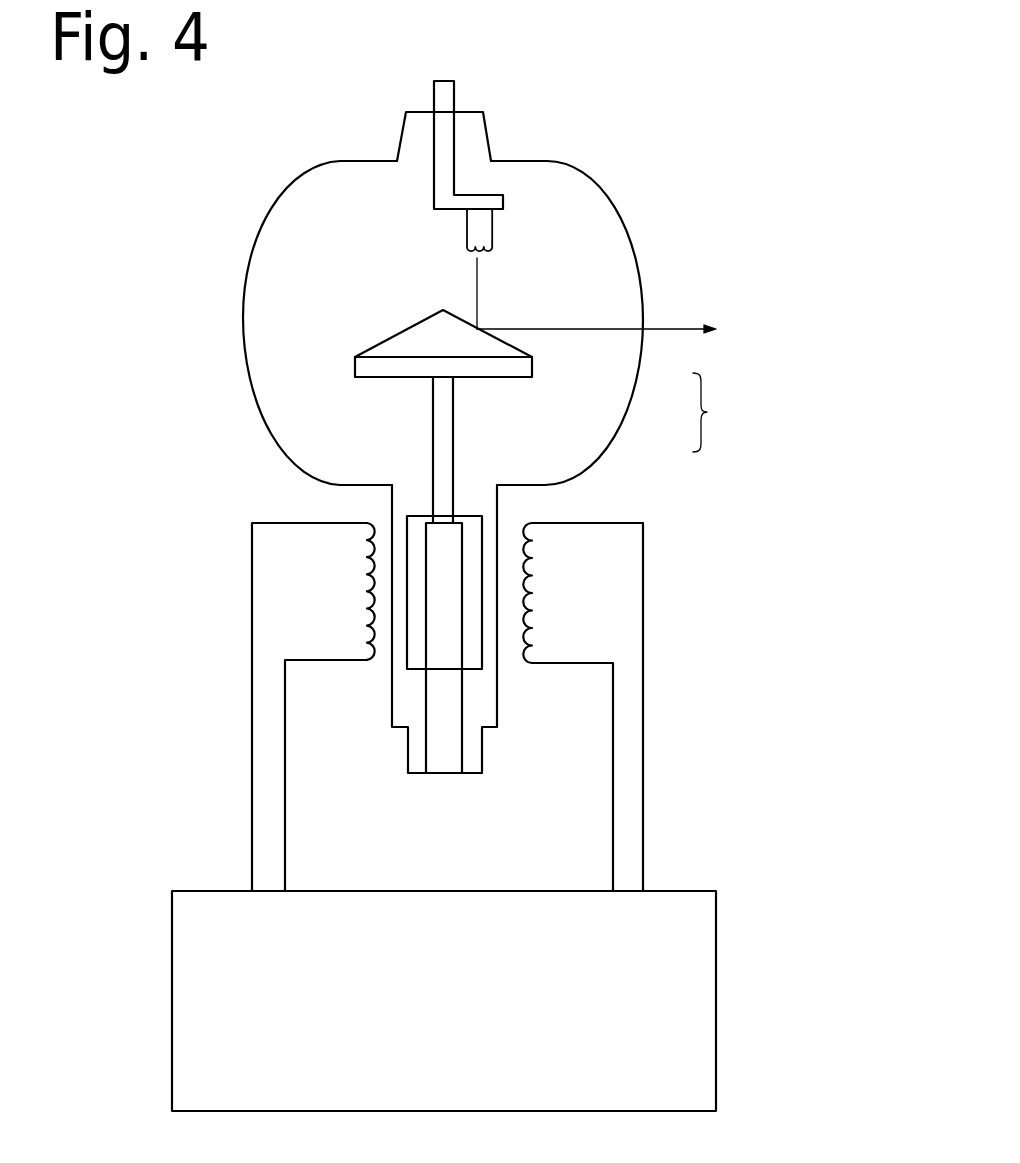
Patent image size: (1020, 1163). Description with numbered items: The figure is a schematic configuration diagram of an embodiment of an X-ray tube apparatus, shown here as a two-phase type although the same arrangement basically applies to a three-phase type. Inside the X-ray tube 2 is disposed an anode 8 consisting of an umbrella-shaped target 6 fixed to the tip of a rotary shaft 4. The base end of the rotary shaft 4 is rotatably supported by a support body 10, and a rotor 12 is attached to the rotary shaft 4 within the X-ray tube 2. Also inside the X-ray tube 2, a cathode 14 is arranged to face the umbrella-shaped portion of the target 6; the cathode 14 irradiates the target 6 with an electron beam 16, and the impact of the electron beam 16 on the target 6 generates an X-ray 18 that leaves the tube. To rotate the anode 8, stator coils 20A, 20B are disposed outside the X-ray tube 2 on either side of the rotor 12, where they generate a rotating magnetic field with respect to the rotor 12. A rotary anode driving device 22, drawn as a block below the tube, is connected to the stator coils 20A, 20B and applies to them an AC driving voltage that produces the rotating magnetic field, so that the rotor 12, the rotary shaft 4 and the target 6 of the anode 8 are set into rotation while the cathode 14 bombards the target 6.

The X-ray tube 2 is at (627, 222).
The rotary shaft 4 is at (455, 429).
The umbrella-shaped target 6 is at (505, 351).
The anode 8 is at (712, 412).
The support body 10 is at (447, 681).
The rotor 12 is at (482, 592).
The cathode 14 is at (482, 240).
The electron beam 16 is at (477, 295).
The X-ray 18 is at (572, 327).
The stator coil 20A is at (530, 627).
The stator coil 20B is at (362, 624).
The rotary anode driving device 22 is at (716, 1026).